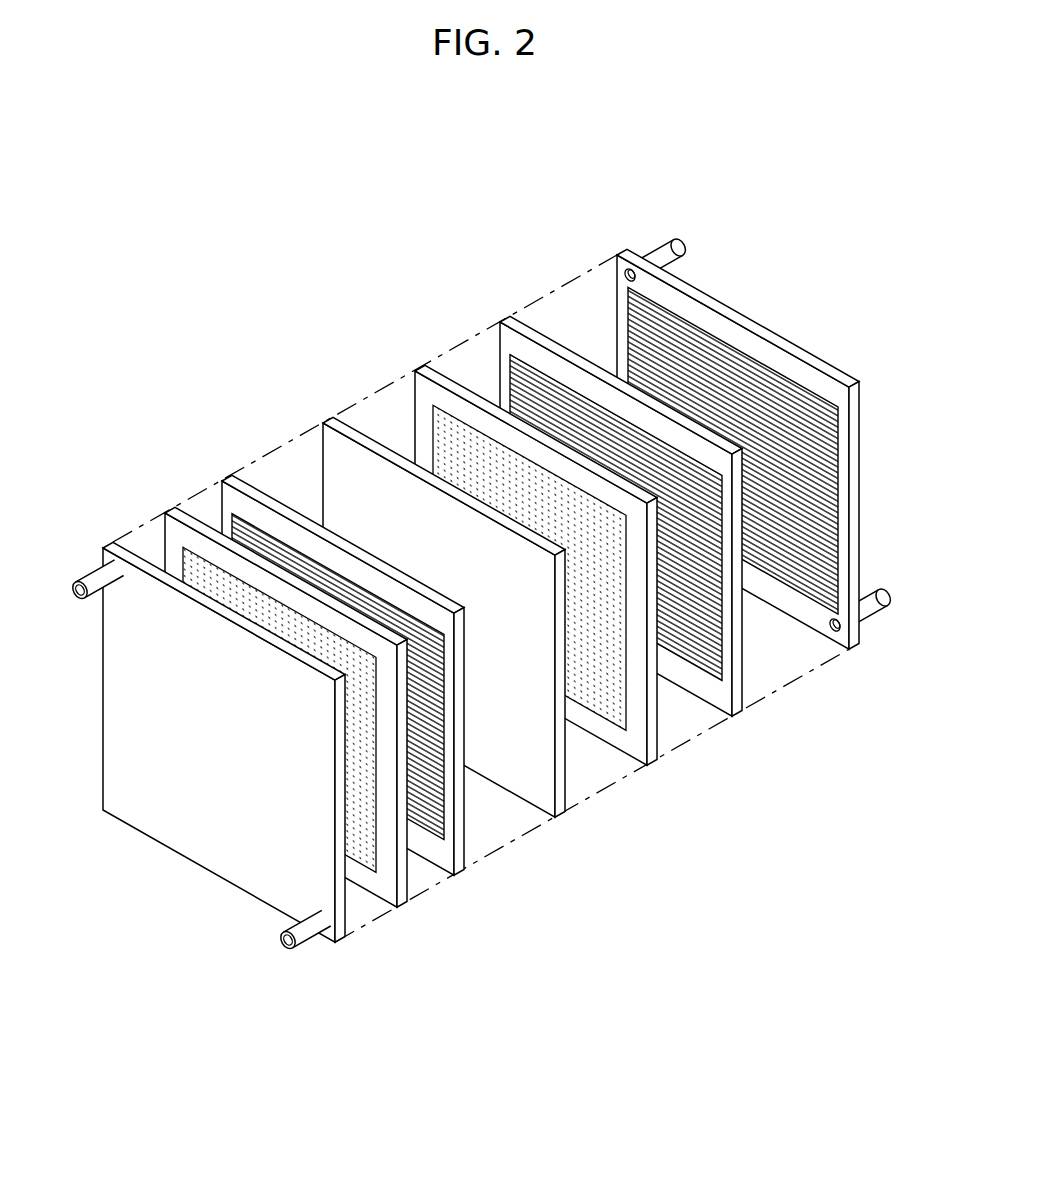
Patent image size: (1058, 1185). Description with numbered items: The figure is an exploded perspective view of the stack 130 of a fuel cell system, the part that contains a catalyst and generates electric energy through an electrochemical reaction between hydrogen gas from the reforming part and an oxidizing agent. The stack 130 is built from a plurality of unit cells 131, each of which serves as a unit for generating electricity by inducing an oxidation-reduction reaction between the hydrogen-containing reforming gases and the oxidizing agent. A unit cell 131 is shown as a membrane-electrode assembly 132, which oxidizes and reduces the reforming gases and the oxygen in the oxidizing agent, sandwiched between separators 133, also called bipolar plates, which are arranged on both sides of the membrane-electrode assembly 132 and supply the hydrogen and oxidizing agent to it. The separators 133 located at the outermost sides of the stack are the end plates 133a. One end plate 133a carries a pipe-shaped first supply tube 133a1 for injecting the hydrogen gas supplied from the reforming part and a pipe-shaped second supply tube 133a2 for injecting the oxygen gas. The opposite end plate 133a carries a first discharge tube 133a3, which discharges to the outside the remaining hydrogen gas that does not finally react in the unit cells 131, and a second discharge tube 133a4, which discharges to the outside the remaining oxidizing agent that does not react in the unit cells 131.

The stack 130 is at (511, 195).
The unit cell 131 is at (478, 254).
The membrane-electrode assembly 132 is at (427, 366).
The separator 133 is at (508, 537).
The end plate 133a is at (343, 916).
The first supply tube 133a1 is at (668, 242).
The second supply tube 133a2 is at (868, 616).
The first discharge tube 133a3 is at (306, 946).
The second discharge tube 133a4 is at (93, 572).